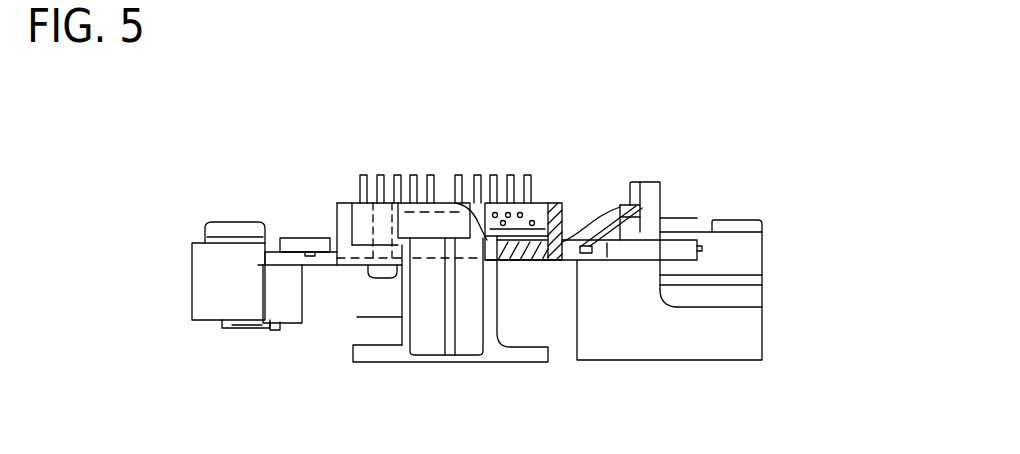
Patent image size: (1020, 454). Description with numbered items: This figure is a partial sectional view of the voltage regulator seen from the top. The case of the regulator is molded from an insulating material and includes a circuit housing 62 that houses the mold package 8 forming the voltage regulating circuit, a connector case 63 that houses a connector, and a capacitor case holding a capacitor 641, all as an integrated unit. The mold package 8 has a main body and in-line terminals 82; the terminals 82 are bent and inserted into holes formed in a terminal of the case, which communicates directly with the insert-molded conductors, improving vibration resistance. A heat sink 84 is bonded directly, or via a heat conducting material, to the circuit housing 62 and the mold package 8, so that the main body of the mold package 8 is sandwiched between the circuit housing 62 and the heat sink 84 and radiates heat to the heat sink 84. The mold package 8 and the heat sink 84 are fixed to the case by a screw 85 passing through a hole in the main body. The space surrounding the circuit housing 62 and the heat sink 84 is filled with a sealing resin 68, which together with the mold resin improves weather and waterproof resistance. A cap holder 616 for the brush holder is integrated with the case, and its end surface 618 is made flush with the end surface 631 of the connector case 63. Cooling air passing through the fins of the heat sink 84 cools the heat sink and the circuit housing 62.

The mold package 8 is at (352, 203).
The circuit housing 62 is at (546, 203).
The connector case 63 is at (738, 245).
The sealing resin 68 is at (528, 205).
The terminals 82 is at (673, 212).
The heat sink 84 is at (478, 200).
The screw 85 is at (372, 277).
The cap holder 616 is at (357, 317).
The end surface 618 is at (498, 362).
The end surface 631 is at (706, 362).
The capacitor 641 is at (205, 232).